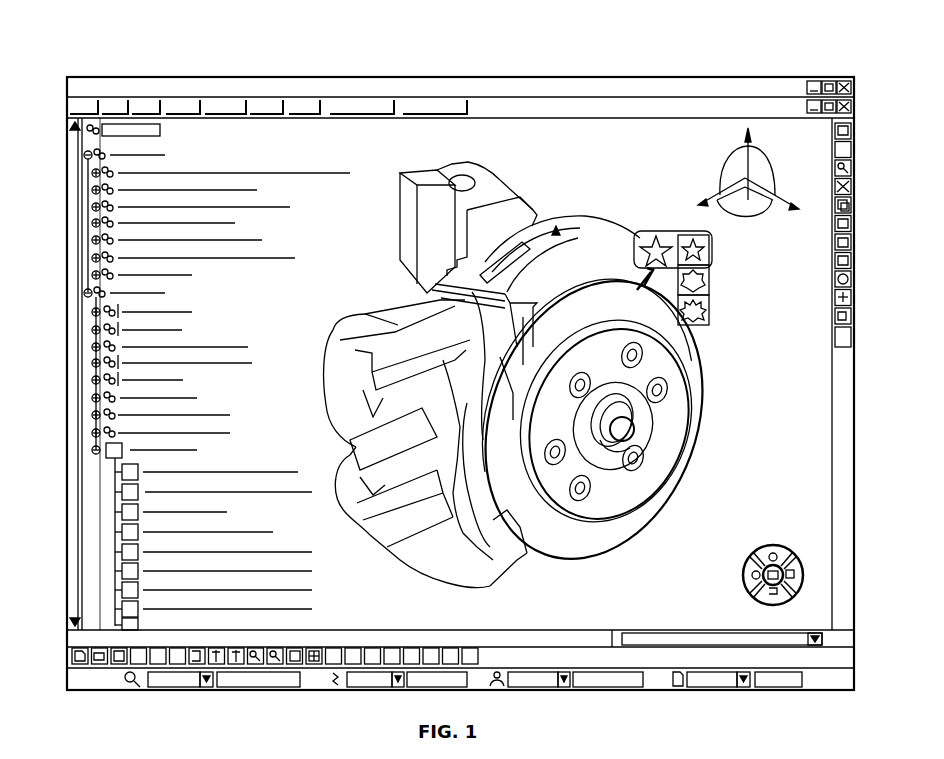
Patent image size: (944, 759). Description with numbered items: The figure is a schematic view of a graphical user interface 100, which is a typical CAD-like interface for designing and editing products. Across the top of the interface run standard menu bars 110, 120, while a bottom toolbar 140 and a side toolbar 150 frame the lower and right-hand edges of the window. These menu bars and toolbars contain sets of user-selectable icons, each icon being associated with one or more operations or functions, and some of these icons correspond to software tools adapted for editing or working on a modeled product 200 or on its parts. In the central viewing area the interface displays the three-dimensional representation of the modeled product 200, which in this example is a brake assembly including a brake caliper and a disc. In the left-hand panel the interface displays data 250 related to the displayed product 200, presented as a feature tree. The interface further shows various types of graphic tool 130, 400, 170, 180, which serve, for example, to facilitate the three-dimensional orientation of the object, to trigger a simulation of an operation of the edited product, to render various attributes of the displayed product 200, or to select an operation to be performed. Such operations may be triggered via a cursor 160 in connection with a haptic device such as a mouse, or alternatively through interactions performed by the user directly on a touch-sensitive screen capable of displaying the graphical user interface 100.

The graphical user interface 100 is at (686, 562).
The menu bar 110 is at (555, 78).
The menu bar 120 is at (632, 108).
The graphic tool 130 is at (760, 208).
The bottom toolbar 140 is at (470, 628).
The side toolbar 150 is at (838, 367).
The cursor 160 is at (700, 326).
The graphic tool 170 is at (654, 230).
The graphic tool 180 is at (714, 302).
The modeled product 200 is at (420, 313).
The data 250 is at (178, 358).
The graphic tool 400 is at (763, 538).